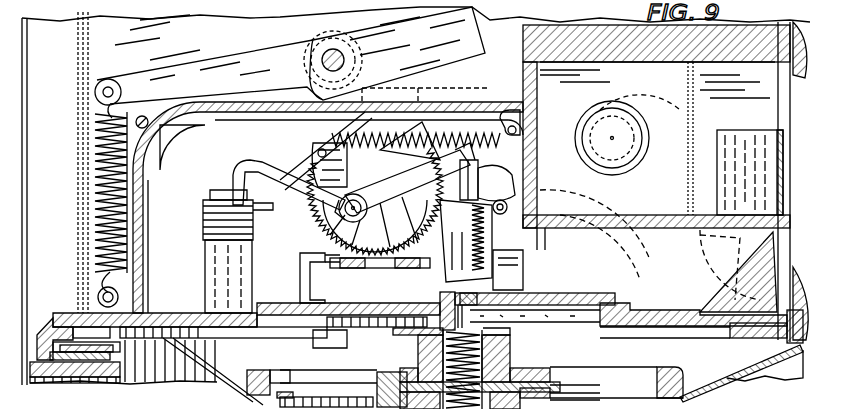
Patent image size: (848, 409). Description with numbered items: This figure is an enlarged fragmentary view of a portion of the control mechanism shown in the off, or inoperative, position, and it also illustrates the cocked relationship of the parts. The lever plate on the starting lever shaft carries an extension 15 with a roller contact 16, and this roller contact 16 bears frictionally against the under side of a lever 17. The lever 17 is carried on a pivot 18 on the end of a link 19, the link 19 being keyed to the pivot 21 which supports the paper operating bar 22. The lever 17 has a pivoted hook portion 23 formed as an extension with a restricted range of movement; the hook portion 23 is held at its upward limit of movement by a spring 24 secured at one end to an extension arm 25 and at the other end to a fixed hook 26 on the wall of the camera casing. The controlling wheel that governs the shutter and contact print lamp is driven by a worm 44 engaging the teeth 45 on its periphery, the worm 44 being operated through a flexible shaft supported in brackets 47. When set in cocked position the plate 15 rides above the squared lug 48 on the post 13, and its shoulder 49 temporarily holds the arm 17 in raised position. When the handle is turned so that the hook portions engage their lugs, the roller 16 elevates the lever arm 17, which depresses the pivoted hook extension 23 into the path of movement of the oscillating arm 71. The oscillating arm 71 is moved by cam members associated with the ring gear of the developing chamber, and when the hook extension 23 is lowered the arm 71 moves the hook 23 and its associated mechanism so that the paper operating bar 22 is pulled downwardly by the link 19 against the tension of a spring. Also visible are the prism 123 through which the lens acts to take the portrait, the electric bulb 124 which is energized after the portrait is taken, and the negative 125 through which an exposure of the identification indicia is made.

The post 13 is at (543, 232).
The extension 15 is at (500, 178).
The roller contact 16 is at (508, 207).
The lever 17 is at (375, 201).
The pivot 18 is at (345, 222).
The link 19 is at (318, 152).
The pivot 21 is at (305, 66).
The paper operating bar 22 is at (279, 50).
The hook portion 23 is at (237, 175).
The spring 24 is at (392, 132).
The extension arm 25 is at (302, 178).
The fixed hook 26 is at (520, 128).
The worm 44 is at (378, 268).
The teeth 45 is at (340, 207).
The brackets 47 is at (308, 294).
The squared lug 48 is at (427, 153).
The shoulder 49 is at (478, 163).
The oscillating arm 71 is at (258, 212).
The prism 123 is at (705, 237).
The electric bulb 124 is at (620, 160).
The negative 125 is at (715, 88).